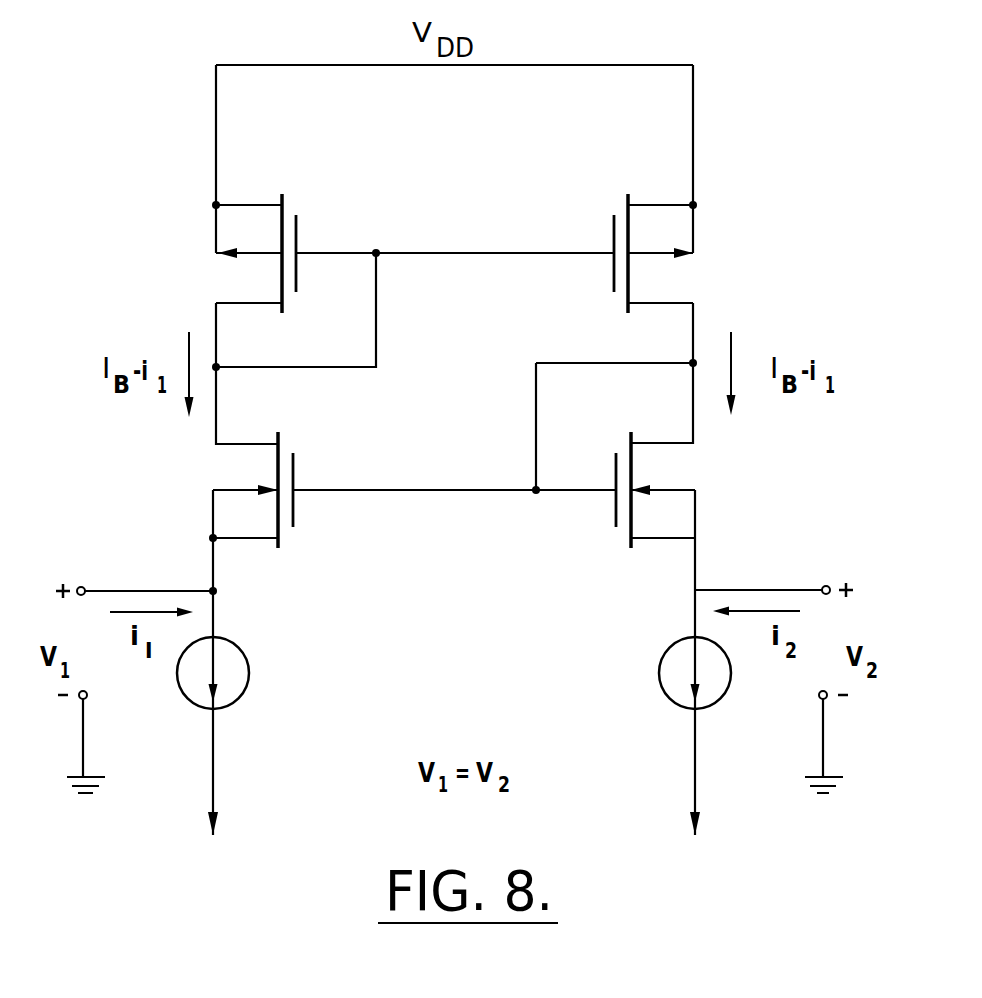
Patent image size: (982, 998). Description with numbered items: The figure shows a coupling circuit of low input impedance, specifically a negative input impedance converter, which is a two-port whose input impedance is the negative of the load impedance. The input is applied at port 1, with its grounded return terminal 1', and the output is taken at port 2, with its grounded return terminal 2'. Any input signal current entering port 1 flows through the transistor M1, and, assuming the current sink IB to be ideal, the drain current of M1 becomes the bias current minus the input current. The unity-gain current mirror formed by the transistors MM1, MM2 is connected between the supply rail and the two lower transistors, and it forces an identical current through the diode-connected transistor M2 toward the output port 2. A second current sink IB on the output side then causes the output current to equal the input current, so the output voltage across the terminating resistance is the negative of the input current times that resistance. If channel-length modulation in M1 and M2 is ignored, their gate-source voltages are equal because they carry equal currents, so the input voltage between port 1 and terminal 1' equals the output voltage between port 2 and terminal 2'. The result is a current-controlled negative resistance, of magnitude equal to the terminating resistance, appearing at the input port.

The current mirror transistor MM1 is at (213, 253).
The current mirror transistor MM2 is at (697, 253).
The input transistor M1 is at (223, 490).
The diode-connected transistor M2 is at (687, 490).
The input port 1 is at (134, 578).
The input port terminal 1' is at (90, 736).
The output port 2 is at (774, 577).
The output port terminal 2' is at (817, 736).
The current sink IB is at (454, 673).